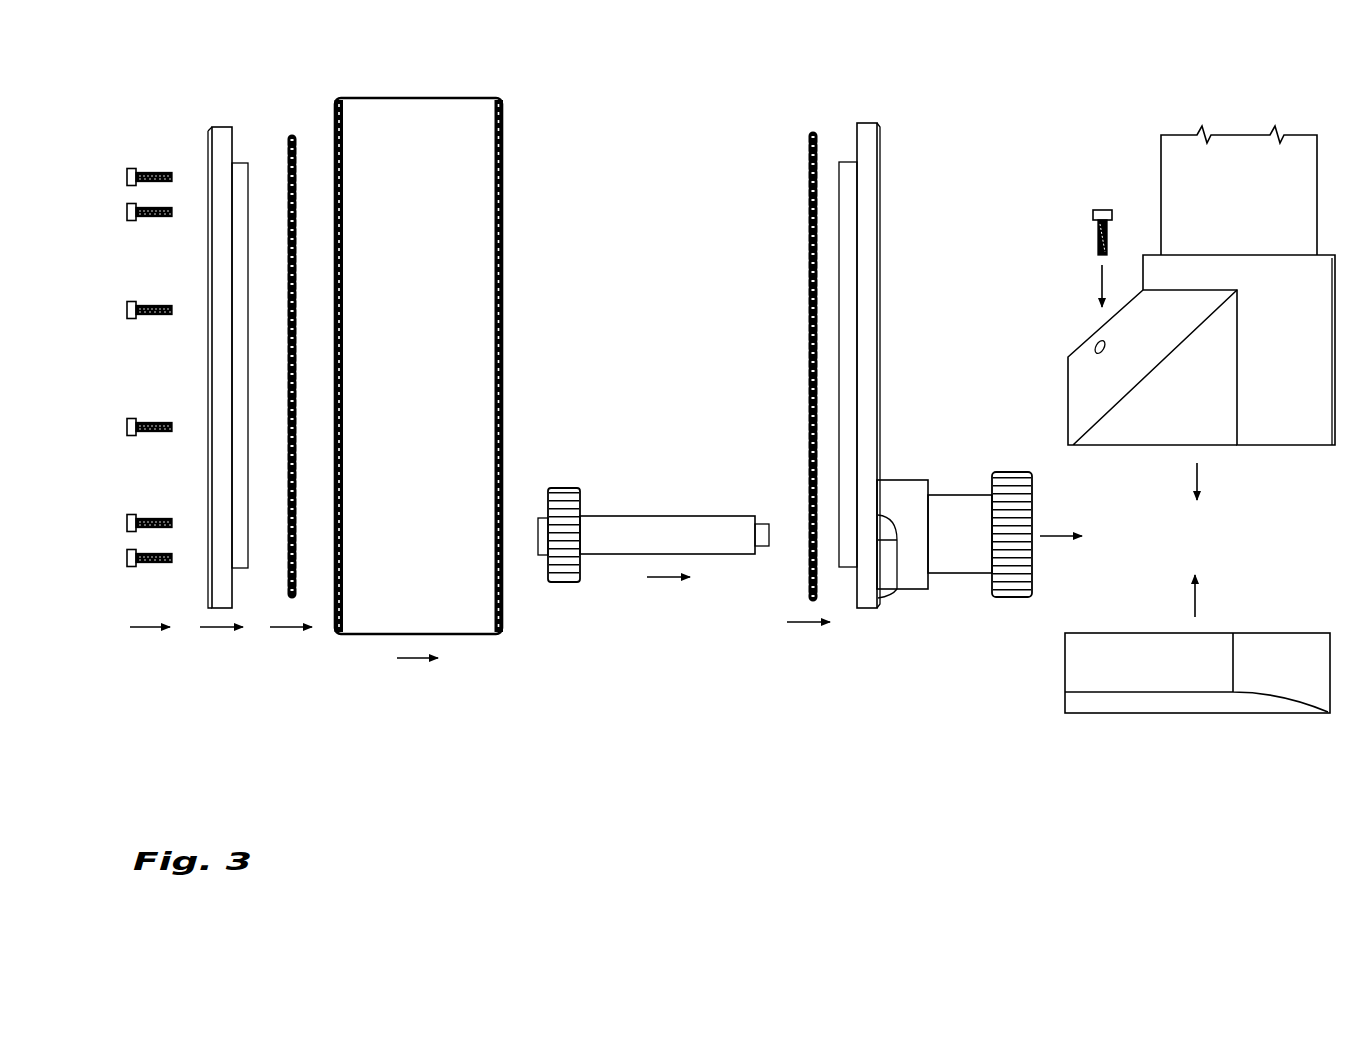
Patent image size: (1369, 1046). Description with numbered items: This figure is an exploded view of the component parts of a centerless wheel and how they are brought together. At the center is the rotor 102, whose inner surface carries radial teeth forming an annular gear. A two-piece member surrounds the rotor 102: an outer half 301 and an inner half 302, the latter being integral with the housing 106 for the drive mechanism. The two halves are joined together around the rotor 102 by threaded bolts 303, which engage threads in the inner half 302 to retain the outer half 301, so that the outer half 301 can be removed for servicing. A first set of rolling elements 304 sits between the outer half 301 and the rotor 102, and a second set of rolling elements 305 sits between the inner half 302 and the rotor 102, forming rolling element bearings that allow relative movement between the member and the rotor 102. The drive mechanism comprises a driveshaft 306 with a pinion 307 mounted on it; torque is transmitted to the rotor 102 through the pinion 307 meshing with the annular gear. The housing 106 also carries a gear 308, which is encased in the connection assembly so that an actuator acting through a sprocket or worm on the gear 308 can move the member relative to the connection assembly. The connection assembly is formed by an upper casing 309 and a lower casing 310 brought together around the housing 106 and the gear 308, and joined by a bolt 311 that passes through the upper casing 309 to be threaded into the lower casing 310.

The rotor 102 is at (390, 97).
The housing 106 is at (918, 490).
The outer half 301 is at (213, 126).
The inner half 302 is at (868, 122).
The threaded bolts 303 is at (150, 134).
The first set of rolling elements 304 is at (290, 132).
The second set of rolling elements 305 is at (812, 130).
The driveshaft 306 is at (703, 540).
The pinion 307 is at (578, 490).
The gear 308 is at (992, 590).
The upper casing 309 is at (1296, 430).
The lower casing 310 is at (1070, 700).
The bolt 311 is at (1098, 210).